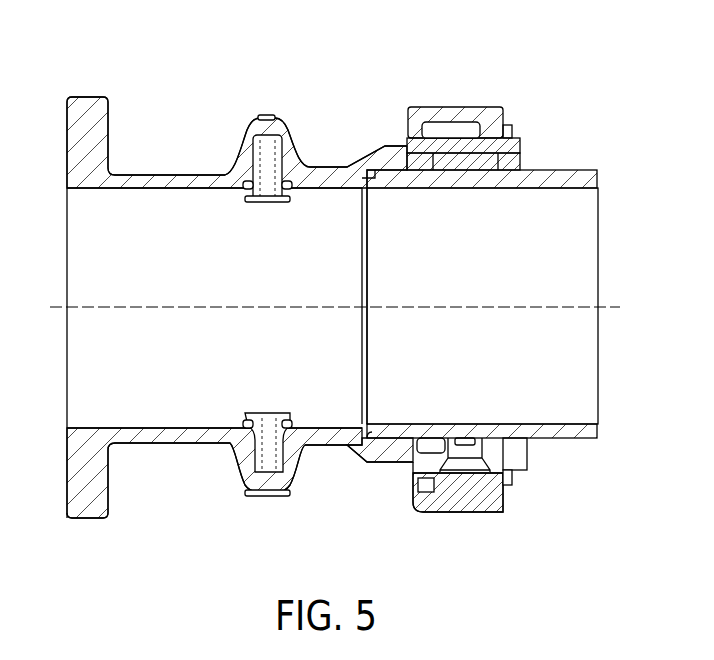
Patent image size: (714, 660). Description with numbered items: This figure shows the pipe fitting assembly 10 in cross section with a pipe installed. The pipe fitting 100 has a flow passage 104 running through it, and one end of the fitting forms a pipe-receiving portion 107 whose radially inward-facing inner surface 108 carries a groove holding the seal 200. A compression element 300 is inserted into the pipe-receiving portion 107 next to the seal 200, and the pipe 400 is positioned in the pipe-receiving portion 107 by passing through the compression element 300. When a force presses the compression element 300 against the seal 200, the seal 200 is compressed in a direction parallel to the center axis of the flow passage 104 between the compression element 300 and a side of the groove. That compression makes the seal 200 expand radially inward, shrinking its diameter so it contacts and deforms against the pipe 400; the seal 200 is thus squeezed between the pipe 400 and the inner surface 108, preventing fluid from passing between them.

The pipe fitting assembly 10 is at (335, 292).
The flow passage 104 is at (247, 343).
The pipe fitting 100 is at (380, 458).
The pipe-receiving portion 107 is at (500, 256).
The inner surface 108 is at (444, 150).
The seal 200 is at (422, 163).
The compression element 300 is at (479, 162).
The pipe 400 is at (582, 170).